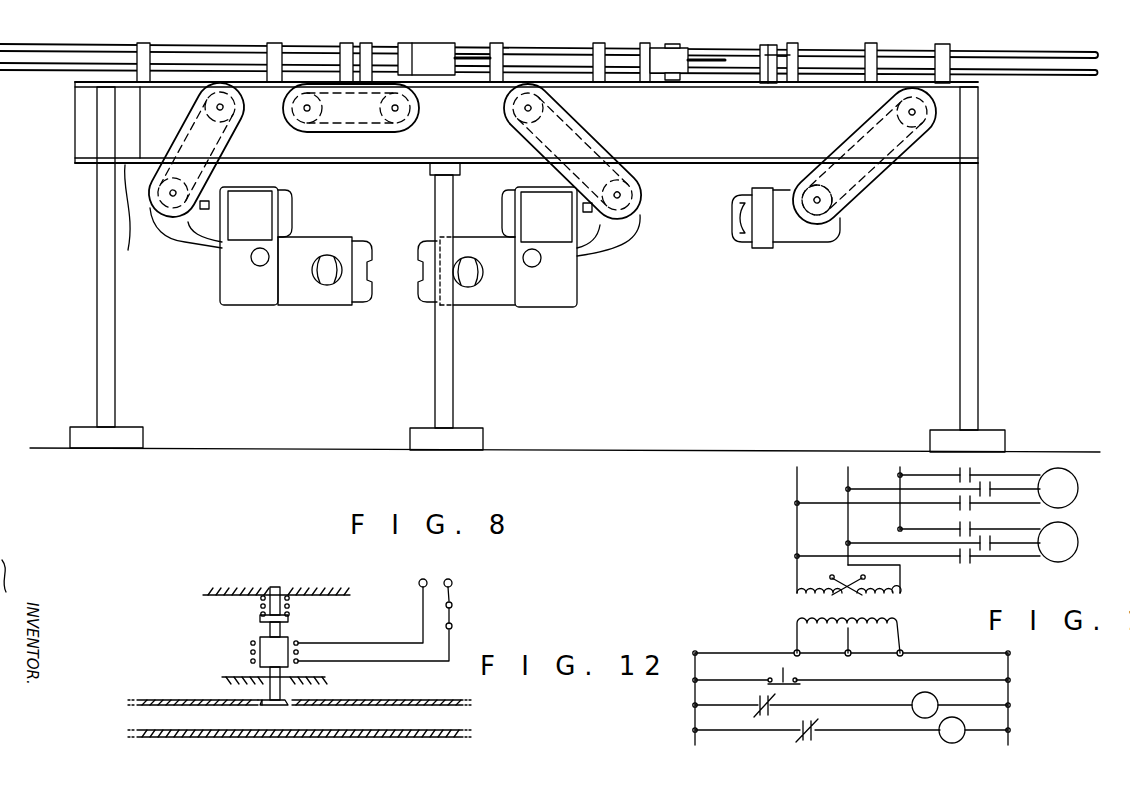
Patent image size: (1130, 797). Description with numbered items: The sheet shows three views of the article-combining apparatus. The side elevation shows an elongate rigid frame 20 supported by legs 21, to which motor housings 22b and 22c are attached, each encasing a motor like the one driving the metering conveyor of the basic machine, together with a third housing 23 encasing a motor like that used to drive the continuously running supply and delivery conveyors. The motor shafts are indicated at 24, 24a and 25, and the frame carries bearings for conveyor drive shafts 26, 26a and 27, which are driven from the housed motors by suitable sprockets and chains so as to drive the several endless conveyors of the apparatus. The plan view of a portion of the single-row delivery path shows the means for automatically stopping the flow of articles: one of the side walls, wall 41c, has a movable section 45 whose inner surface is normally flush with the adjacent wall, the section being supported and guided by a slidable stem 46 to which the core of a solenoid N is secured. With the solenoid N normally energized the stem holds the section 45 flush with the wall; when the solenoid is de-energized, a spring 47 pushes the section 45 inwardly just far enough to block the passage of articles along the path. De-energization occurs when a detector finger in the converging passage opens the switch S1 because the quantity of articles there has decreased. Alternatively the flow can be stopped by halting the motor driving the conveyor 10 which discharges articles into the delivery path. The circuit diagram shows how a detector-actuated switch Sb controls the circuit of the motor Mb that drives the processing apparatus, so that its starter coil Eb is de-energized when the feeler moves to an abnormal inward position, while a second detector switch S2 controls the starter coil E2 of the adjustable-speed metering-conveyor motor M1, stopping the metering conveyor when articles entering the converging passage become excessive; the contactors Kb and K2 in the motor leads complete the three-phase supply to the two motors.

In FIG. 8, the frame 20 is at (526, 182).
In FIG. 8, the legs 21 is at (103, 375).
In FIG. 8, the motor housing 22b is at (243, 295).
In FIG. 8, the motor housing 22c is at (503, 283).
In FIG. 8, the motor housing 23 is at (797, 237).
In FIG. 8, the motor shaft 24 is at (185, 237).
In FIG. 8, the motor shaft 24a is at (622, 205).
In FIG. 8, the motor shaft 25 is at (838, 228).
In FIG. 8, the conveyor drive shaft 26 is at (232, 118).
In FIG. 8, the conveyor drive shaft 26a is at (518, 118).
In FIG. 8, the conveyor drive shaft 27 is at (930, 115).
In FIG. 12, the spring 47 is at (287, 607).
In FIG. 12, the solenoid N is at (350, 634).
In FIG. 12, the switch S1 is at (453, 613).
In FIG. 12, the slidable stem 46 is at (266, 695).
In FIG. 12, the side wall 41c is at (395, 700).
In FIG. 12, the movable section 45 is at (280, 705).
In FIG. 12, the conveyor 10 is at (430, 731).
In FIG. 13, the contactor Kb is at (986, 467).
In FIG. 13, the contactor K2 is at (986, 522).
In FIG. 13, the motor Mb is at (1063, 480).
In FIG. 13, the motor M1 is at (1063, 537).
In FIG. 13, the detector-actuated switch Sb is at (749, 698).
In FIG. 13, the switch S2 is at (825, 724).
In FIG. 13, the starter coil Eb is at (933, 702).
In FIG. 13, the starter coil E2 is at (960, 726).